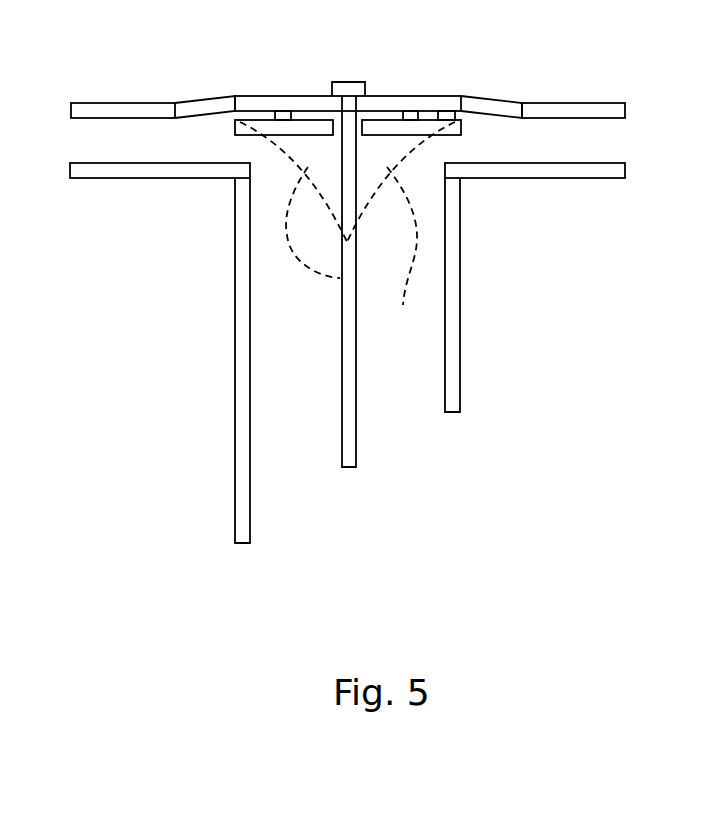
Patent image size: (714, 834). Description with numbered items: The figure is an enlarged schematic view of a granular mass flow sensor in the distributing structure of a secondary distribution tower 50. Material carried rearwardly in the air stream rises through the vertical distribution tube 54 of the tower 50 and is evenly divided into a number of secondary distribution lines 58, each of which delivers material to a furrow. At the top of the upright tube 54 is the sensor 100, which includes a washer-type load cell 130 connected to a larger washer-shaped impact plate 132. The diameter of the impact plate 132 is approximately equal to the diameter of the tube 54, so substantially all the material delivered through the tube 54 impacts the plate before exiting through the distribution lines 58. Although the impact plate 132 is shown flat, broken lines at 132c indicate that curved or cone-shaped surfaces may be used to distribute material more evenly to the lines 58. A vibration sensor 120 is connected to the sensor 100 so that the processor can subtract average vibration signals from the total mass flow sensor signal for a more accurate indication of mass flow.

The secondary distribution tower 50 is at (160, 337).
The vertical distribution tube 54 is at (235, 433).
The secondary distribution line 58 is at (86, 178).
The sensor 100 is at (245, 142).
The vibration sensor 120 is at (448, 115).
The washer-type load cell 130 is at (273, 117).
The impact plate 132 is at (235, 135).
The curved or cone-shaped surface 132c is at (340, 278).